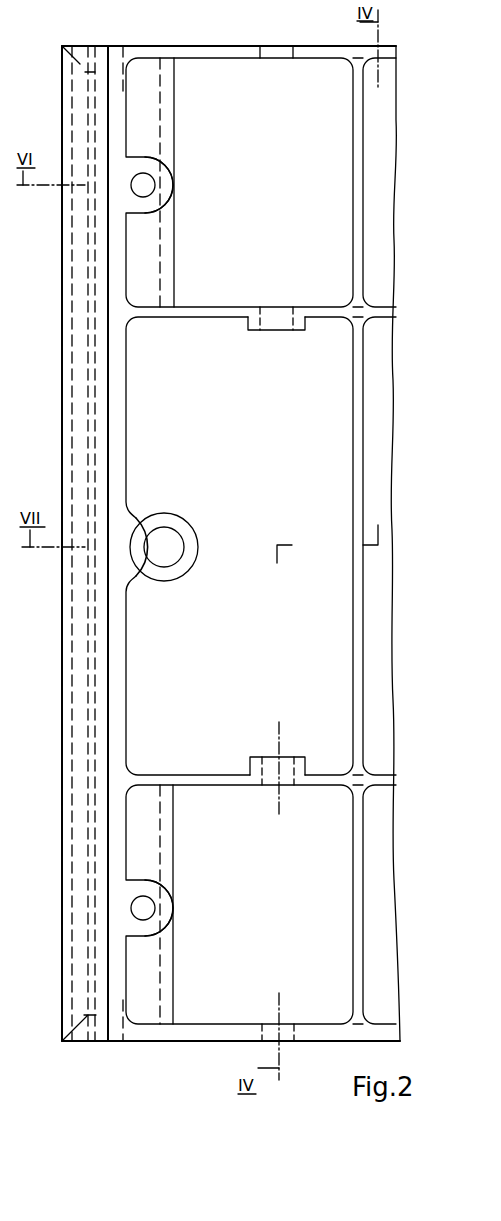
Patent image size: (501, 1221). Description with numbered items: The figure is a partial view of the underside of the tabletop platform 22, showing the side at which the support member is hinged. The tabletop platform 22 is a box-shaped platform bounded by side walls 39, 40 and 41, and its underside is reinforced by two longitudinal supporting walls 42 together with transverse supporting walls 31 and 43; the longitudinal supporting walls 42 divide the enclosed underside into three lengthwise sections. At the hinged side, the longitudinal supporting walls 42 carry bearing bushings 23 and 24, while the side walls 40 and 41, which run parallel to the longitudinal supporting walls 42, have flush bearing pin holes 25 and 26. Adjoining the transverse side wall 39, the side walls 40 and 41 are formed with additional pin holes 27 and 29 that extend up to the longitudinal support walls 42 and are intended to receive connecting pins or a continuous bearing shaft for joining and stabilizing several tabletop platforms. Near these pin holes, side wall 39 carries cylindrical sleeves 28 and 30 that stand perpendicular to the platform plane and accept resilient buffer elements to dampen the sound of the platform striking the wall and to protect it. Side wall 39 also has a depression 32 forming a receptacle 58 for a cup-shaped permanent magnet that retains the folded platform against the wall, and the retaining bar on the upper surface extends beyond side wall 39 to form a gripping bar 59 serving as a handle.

The tabletop platform 22 is at (338, 476).
The bearing bushing 23 is at (256, 333).
The bearing bushing 24 is at (303, 762).
The bearing pin hole 25 is at (288, 58).
The bearing pin hole 26 is at (293, 1020).
The additional pin hole 27 is at (163, 247).
The cylindrical sleeve 28 is at (168, 172).
The additional pin hole 29 is at (163, 858).
The cylindrical sleeve 30 is at (165, 922).
The transverse supporting wall 31 is at (360, 418).
The depression 32 is at (170, 565).
The side wall 39 is at (118, 428).
The side wall 40 is at (221, 46).
The side wall 41 is at (207, 1030).
The longitudinal supporting wall 42 is at (222, 312).
The transverse supporting wall 43 is at (355, 215).
The receptacle 58 is at (178, 530).
The gripping bar 59 is at (85, 650).